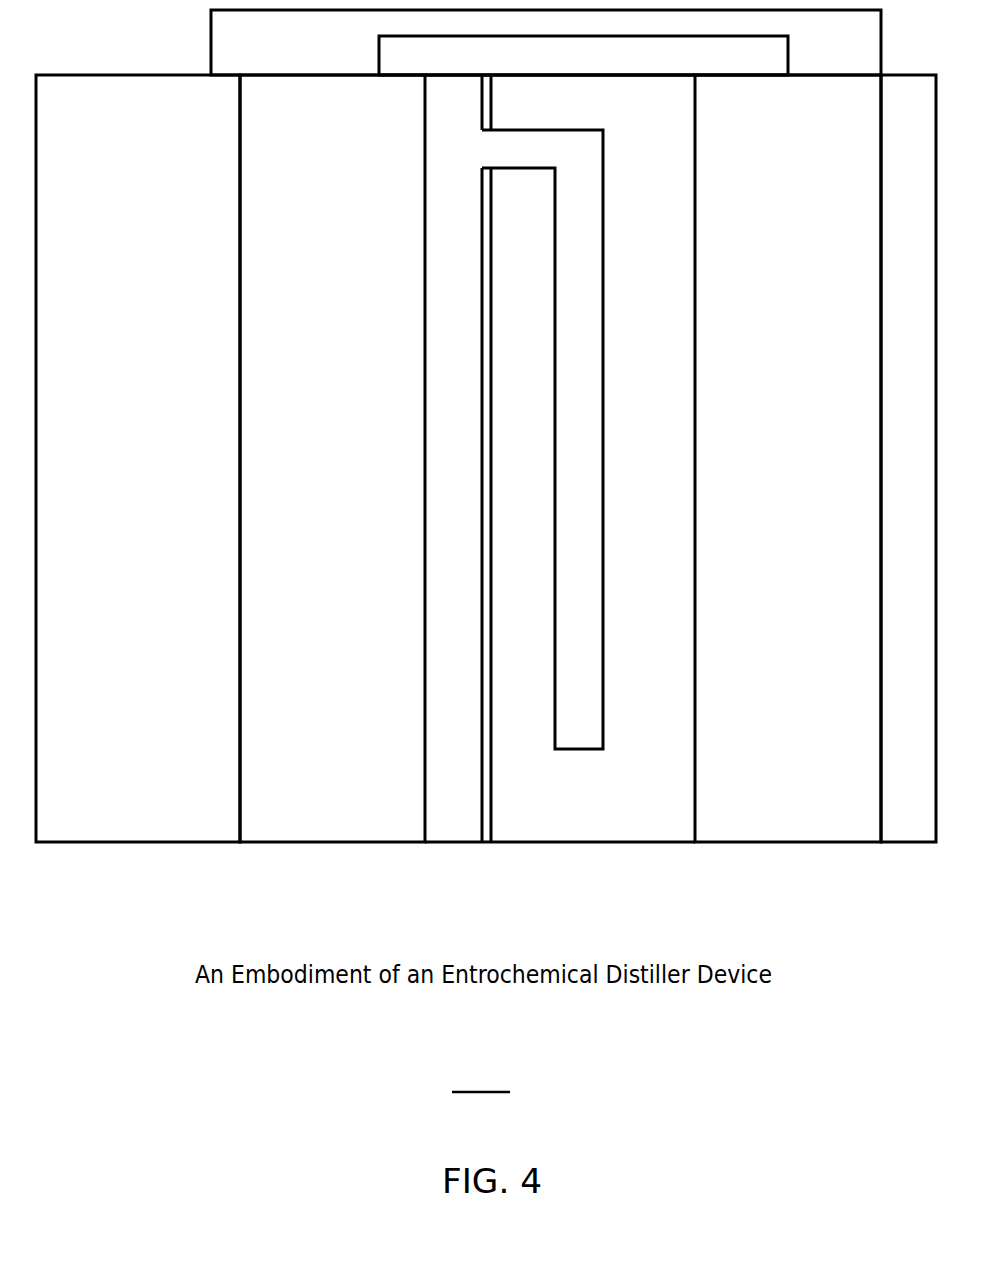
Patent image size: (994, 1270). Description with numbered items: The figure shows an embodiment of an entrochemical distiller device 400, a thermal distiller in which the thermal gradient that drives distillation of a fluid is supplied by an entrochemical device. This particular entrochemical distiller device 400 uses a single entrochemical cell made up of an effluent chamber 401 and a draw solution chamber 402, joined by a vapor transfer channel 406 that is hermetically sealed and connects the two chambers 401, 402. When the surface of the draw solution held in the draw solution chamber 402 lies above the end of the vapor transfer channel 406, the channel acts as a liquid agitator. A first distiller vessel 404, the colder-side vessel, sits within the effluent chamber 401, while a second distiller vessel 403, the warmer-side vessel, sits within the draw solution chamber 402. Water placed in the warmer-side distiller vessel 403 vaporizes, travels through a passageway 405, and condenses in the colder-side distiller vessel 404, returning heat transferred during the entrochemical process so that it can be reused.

The entrochemical distiller device 400 is at (481, 1073).
The effluent chamber 401 is at (138, 458).
The draw solution chamber 402 is at (909, 458).
The second distiller vessel 403 is at (788, 458).
The first distiller vessel 404 is at (332, 458).
The passageway 405 is at (546, 42).
The vapor transfer channel 406 is at (545, 458).